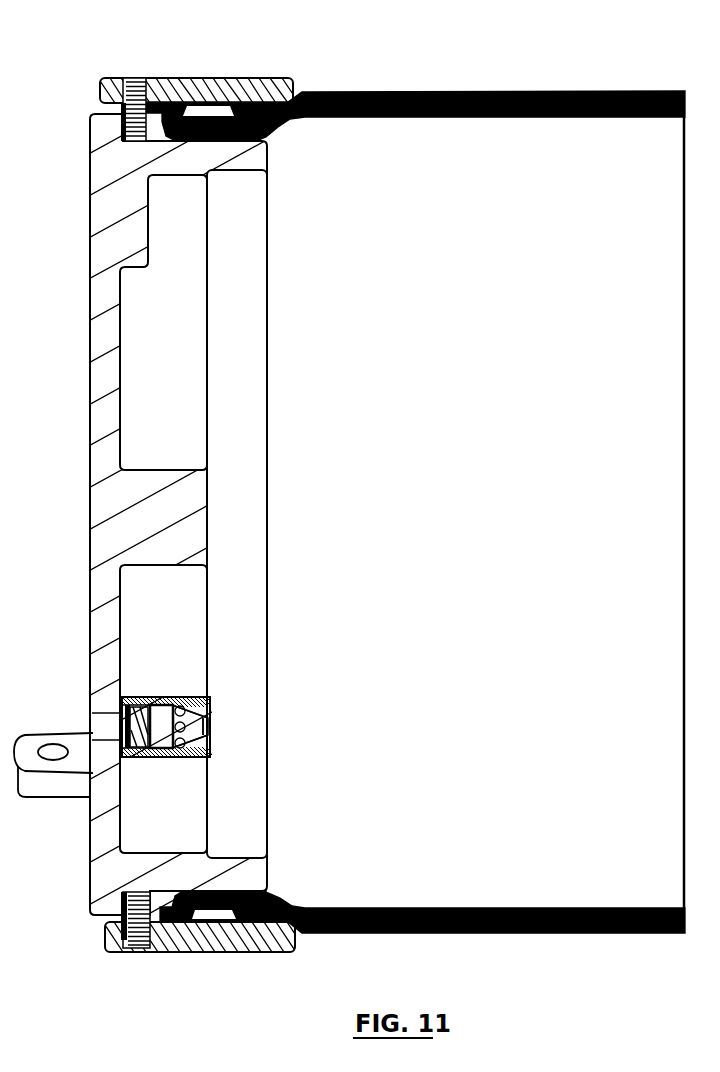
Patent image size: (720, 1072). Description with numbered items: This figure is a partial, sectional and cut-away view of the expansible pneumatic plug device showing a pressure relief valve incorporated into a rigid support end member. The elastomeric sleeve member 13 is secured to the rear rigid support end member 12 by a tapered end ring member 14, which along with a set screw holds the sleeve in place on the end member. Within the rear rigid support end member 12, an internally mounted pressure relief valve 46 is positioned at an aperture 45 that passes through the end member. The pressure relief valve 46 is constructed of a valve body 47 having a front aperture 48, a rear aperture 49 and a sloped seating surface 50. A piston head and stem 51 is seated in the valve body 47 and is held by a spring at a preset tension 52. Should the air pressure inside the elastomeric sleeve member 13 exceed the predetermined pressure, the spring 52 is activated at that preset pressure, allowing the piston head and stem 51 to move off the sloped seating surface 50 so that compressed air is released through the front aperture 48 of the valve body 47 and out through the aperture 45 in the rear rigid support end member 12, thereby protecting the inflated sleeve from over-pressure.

The rear rigid support end member 12 is at (105, 540).
The elastomeric sleeve member 13 is at (443, 91).
The front tapered end ring member 14 is at (188, 952).
The aperture 45 is at (90, 737).
The pressure relief valve 46 is at (188, 728).
The valve body 47 is at (170, 699).
The front aperture 48 is at (210, 727).
The rear aperture 49 is at (127, 728).
The sloped seating surface 50 is at (201, 697).
The piston head and stem 51 is at (163, 738).
The spring at a preset tension 52 is at (143, 758).